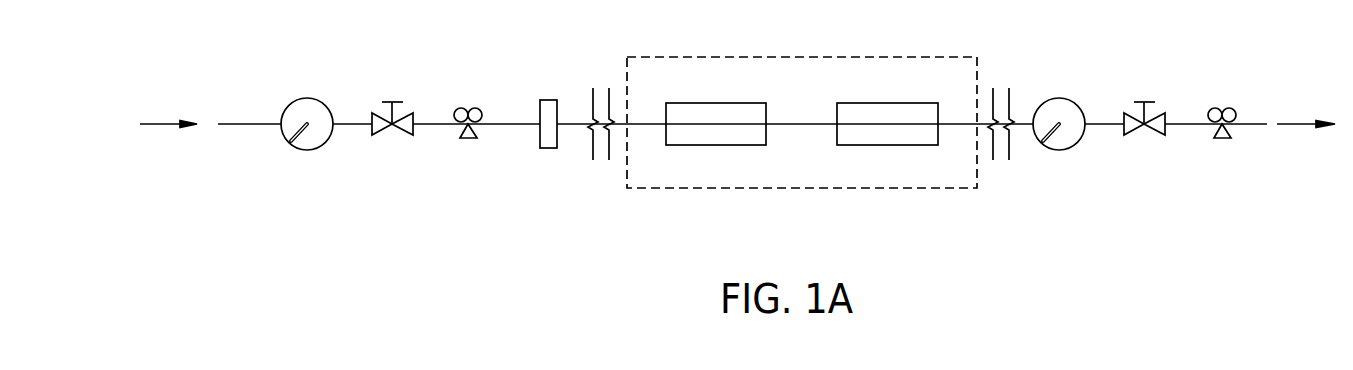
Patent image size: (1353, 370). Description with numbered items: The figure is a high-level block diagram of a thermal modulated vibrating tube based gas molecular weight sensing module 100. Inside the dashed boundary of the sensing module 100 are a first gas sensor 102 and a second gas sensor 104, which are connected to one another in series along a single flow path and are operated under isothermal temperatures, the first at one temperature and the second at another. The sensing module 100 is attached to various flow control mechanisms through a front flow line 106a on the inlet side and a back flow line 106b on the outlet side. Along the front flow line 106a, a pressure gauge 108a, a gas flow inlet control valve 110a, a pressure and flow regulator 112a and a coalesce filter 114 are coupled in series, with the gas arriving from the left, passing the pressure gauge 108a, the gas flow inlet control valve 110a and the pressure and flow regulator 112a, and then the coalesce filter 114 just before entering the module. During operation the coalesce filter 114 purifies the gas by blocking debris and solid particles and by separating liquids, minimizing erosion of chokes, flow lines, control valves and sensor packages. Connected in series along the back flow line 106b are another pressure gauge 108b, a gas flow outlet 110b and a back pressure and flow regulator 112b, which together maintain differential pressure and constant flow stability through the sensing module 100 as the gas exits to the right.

The gas molecular weight sensing module 100 is at (656, 57).
The first gas sensor 102 is at (698, 146).
The second gas sensor 104 is at (868, 146).
The front flow line 106a is at (230, 123).
The back flow line 106b is at (1253, 123).
The pressure gauge 108a is at (303, 151).
The pressure gauge 108b is at (1057, 151).
The gas flow inlet control valve 110a is at (389, 101).
The gas flow outlet 110b is at (1143, 101).
The pressure and flow regulator 112a is at (469, 140).
The back pressure and flow regulator 112b is at (1222, 140).
The coalesce filter 114 is at (544, 100).